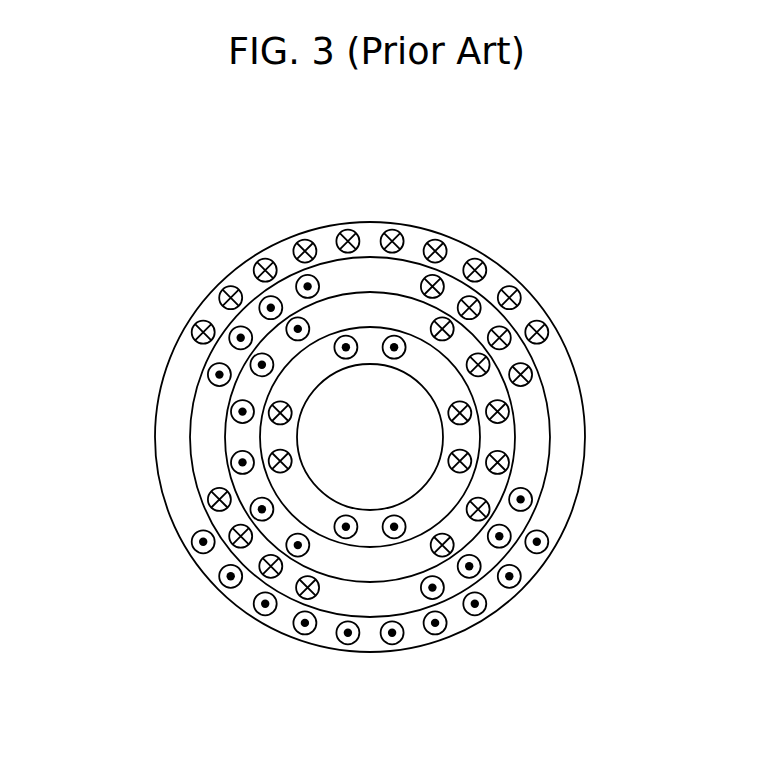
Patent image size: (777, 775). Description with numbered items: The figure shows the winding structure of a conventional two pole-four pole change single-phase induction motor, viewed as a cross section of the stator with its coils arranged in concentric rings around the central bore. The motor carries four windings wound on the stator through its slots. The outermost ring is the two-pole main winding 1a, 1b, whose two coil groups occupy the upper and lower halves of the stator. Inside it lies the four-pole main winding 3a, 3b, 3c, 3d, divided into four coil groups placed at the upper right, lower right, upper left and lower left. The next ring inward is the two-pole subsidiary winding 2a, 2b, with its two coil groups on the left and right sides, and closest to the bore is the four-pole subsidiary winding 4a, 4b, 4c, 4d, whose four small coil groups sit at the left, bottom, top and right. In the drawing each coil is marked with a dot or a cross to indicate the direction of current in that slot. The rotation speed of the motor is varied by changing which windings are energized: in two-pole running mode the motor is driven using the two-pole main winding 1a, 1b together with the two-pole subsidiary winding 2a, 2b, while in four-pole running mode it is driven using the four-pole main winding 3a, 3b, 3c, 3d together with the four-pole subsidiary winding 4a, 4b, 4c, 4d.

The 2-pole main winding 1a is at (497, 281).
The 2-pole main winding 1b is at (497, 593).
The 2-pole subsidiary winding 2a is at (242, 386).
The 2-pole subsidiary winding 2b is at (487, 394).
The 4-pole main winding 3a is at (447, 290).
The 4-pole main winding 3b is at (450, 580).
The 4-pole main winding 3c is at (287, 298).
The 4-pole main winding 3d is at (290, 582).
The 4-pole subsidiary winding 4a is at (275, 430).
The 4-pole subsidiary winding 4b is at (377, 538).
The 4-pole subsidiary winding 4c is at (372, 347).
The 4-pole subsidiary winding 4d is at (466, 442).